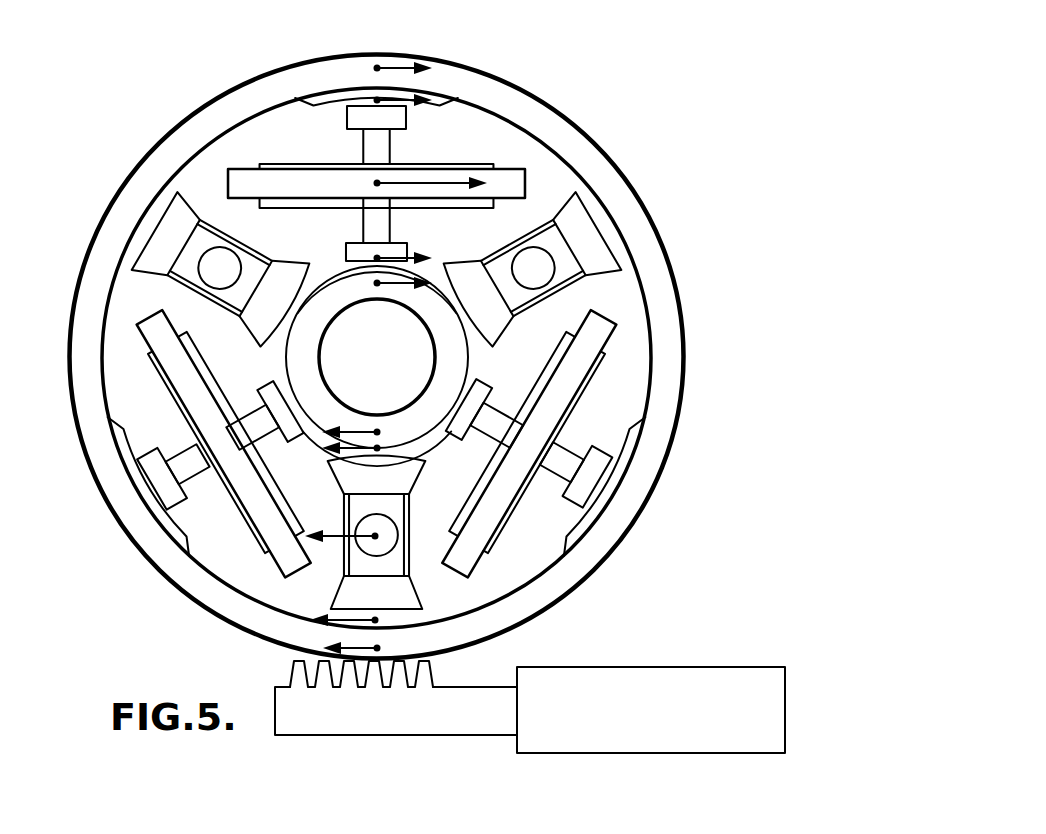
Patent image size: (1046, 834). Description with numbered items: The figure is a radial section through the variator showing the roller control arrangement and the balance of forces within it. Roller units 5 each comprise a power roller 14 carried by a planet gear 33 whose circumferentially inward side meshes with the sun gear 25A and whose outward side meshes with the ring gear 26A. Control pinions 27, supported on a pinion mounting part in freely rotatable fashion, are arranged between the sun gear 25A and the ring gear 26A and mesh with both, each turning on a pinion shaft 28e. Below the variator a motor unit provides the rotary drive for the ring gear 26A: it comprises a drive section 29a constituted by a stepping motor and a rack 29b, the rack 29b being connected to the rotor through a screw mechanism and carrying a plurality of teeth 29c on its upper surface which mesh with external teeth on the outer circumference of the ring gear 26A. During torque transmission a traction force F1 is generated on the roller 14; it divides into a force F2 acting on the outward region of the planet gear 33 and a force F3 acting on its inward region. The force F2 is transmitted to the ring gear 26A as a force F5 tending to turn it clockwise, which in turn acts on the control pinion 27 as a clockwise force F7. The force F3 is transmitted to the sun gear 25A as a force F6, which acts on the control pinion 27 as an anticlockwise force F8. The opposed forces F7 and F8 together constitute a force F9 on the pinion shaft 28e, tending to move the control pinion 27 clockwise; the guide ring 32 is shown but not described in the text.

The roller unit 5 is at (306, 141).
The roller 14 is at (514, 182).
The sun gear 25A is at (303, 386).
The ring gear 26A is at (591, 160).
The control pinion 27 is at (187, 268).
The pinion shaft 28e is at (531, 287).
The drive section 29a is at (640, 730).
The rack 29b is at (443, 705).
The teeth 29c is at (290, 693).
The guide ring 32 is at (441, 103).
The planet gear 33 is at (352, 120).
The traction force F1 is at (417, 182).
The force F2 is at (372, 98).
The force F3 is at (400, 257).
The force F5 is at (388, 66).
The force F6 is at (360, 283).
The force F7 is at (405, 580).
The force F8 is at (380, 449).
The force F9 is at (344, 496).